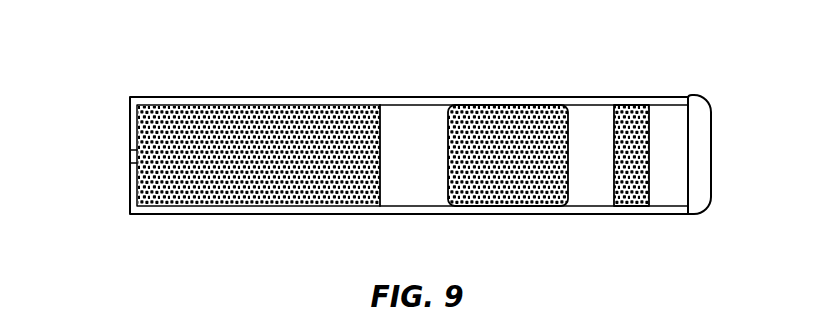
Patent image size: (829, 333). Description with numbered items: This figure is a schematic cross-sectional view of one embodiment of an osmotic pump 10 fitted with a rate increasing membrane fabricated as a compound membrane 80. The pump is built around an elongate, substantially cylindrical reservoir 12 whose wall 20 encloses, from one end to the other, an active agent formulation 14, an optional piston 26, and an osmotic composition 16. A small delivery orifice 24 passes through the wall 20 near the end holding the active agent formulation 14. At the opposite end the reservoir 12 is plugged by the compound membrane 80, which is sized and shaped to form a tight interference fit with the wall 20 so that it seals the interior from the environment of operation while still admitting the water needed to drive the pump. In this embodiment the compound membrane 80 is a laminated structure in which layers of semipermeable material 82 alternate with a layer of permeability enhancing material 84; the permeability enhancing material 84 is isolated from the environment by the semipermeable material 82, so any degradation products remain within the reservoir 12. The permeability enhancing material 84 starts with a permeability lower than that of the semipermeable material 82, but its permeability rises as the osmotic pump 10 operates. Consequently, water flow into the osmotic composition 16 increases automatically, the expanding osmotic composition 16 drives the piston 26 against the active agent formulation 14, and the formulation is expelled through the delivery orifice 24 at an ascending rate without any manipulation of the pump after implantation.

The osmotic pump 10 is at (416, 136).
The reservoir 12 is at (247, 97).
The active agent formulation 14 is at (220, 190).
The osmotic composition 16 is at (510, 123).
The wall 20 is at (130, 185).
The delivery orifice 24 is at (128, 153).
The piston 26 is at (408, 193).
The compound membrane 80 is at (708, 104).
The semipermeable material 82 is at (582, 180).
The permeability enhancing material 84 is at (632, 182).